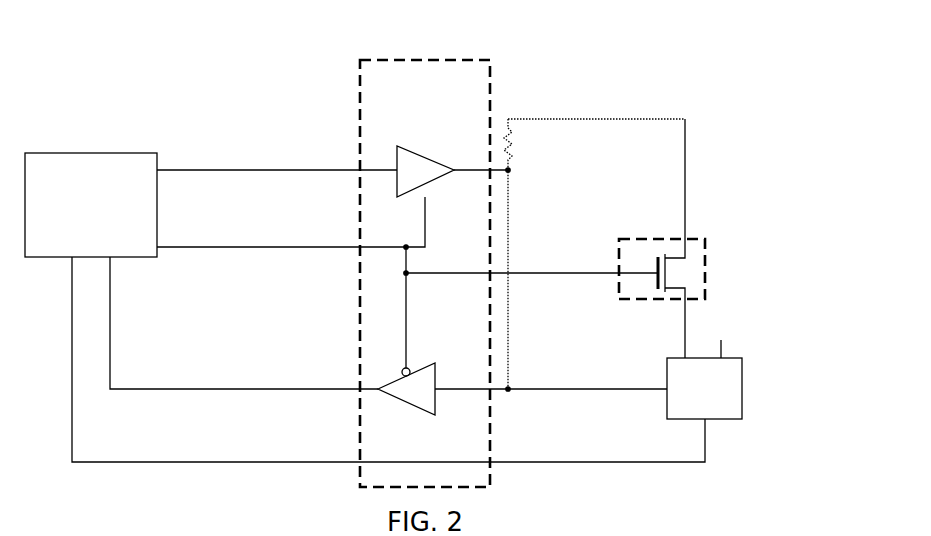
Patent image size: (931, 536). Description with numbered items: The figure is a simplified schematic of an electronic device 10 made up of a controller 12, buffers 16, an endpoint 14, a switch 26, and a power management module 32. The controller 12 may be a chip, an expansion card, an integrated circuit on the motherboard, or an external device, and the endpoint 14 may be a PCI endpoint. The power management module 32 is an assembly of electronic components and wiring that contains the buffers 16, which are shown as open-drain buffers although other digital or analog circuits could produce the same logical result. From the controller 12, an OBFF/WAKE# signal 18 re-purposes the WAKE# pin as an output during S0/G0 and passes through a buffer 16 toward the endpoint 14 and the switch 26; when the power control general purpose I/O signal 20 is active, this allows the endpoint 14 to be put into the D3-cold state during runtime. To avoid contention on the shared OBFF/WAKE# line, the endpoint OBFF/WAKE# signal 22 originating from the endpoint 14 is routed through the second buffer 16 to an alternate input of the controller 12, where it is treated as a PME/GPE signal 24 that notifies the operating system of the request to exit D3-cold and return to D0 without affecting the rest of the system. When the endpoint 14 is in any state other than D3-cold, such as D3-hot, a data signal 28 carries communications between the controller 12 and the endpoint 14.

The electronic device 10 is at (622, 78).
The controller 12 is at (92, 152).
The endpoint 14 is at (744, 396).
The buffers 16 is at (440, 182).
The OBFF/WAKE# signal 18 is at (194, 167).
The power control general purpose I/O signal 20 is at (201, 254).
The endpoint OBFF/WAKE# signal 22 is at (577, 394).
The PME/GPE signal 24 is at (186, 393).
The switch 26 is at (707, 262).
The data signal 28 is at (583, 467).
The power management module 32 is at (359, 109).